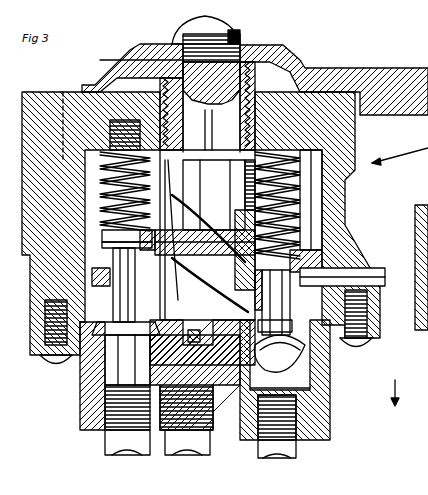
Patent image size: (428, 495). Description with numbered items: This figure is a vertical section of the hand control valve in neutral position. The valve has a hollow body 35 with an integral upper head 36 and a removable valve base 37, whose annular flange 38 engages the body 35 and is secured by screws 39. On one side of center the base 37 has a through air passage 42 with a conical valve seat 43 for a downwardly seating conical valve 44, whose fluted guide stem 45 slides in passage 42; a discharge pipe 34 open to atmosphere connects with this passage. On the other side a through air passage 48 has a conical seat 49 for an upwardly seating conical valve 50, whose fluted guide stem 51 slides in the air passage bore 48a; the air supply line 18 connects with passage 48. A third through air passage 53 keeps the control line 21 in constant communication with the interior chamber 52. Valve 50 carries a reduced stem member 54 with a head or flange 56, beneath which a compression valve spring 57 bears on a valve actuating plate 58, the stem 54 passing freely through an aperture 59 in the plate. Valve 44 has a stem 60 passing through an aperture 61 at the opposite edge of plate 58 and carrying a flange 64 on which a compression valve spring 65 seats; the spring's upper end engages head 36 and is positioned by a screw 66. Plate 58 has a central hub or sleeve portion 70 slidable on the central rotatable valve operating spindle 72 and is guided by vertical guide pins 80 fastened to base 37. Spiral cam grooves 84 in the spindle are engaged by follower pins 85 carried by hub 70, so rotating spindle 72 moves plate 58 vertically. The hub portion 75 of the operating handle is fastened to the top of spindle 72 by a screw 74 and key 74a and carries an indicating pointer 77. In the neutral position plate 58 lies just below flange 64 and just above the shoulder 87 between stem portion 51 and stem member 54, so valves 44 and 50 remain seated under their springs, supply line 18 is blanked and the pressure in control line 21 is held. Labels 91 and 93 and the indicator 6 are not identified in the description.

The key 74a is at (176, 40).
The screw 74 is at (236, 36).
The hub portion 75 is at (278, 55).
The upper head 36 is at (318, 105).
The indicating pointer 77 is at (92, 84).
The screw 66 is at (80, 108).
The valve operating spindle 72 is at (207, 107).
The vertical guide pin 80 is at (207, 235).
The follower pin 85 is at (205, 236).
The hub or sleeve portion 70 is at (248, 222).
The head or flange 56 is at (311, 200).
The compression valve spring 57 is at (330, 188).
The interior chamber 52 is at (330, 205).
The hollow body 35 is at (350, 228).
The compression valve spring 65 is at (118, 175).
The head or flange 64 is at (121, 244).
The stem member 54 is at (306, 254).
The valve actuating plate 58 is at (340, 272).
The aperture 59 is at (330, 283).
The stem 60 is at (118, 255).
The aperture 61 is at (113, 290).
The disc 91 is at (177, 240).
The spiral cam groove 84 is at (210, 255).
The shoulder 87 is at (252, 290).
The fluted guide stem 51 is at (285, 312).
The annular flange 38 is at (370, 330).
The plug 93 is at (202, 342).
The conical valve 44 is at (126, 329).
The conical valve 50 is at (285, 380).
The conical valve seat 43 is at (45, 340).
The through air passage 42 is at (108, 360).
The valve base 37 is at (80, 382).
The conical seat 49 is at (348, 352).
The screw 39 is at (362, 352).
The fluted guide stem 45 is at (122, 372).
The through air passage 48 is at (315, 382).
The discharge pipe 34 is at (108, 448).
The control line 21 is at (182, 450).
The through air passage 53 is at (240, 430).
The air passage bore 48a is at (262, 395).
The air supply line 18 is at (296, 455).
The section arrow 6 is at (395, 387).